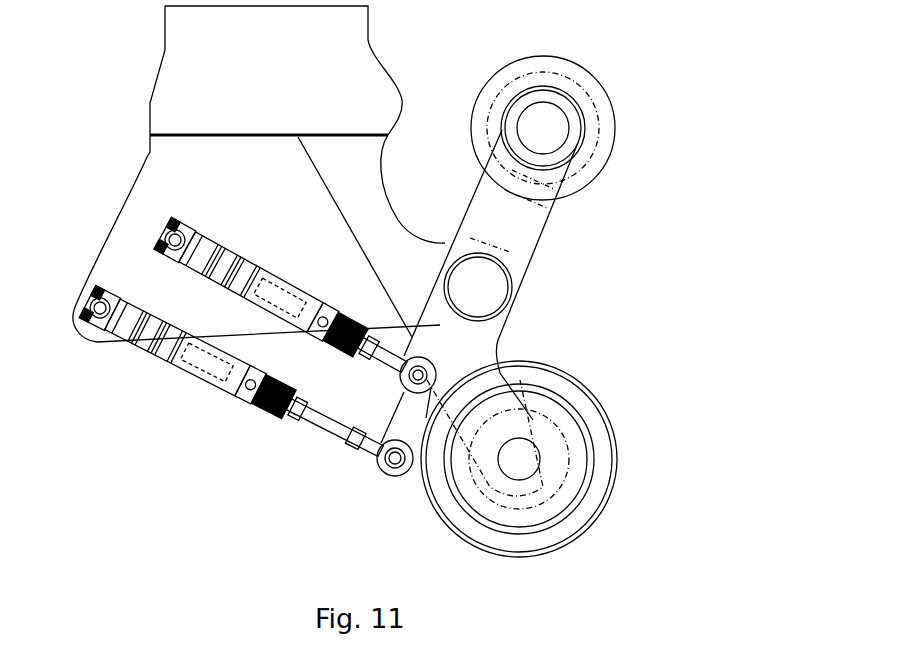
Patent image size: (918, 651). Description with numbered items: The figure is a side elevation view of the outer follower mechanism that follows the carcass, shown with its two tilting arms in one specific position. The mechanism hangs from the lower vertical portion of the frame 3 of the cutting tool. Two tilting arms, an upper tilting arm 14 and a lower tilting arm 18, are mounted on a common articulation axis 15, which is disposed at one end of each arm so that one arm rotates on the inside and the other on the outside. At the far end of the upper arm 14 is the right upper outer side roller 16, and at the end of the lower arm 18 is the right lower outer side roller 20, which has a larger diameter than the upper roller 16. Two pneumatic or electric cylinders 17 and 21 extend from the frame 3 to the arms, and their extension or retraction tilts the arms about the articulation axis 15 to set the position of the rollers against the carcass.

The frame 3 is at (118, 185).
The upper tilting arm 14 is at (535, 212).
The common articulation axis 15 is at (485, 287).
The upper outer side roller 16 is at (600, 80).
The pneumatic or electric cylinder 17 is at (153, 365).
The lower tilting arm 18 is at (505, 340).
The lower outer side roller 20 is at (607, 427).
The pneumatic or electric cylinder 21 is at (245, 310).